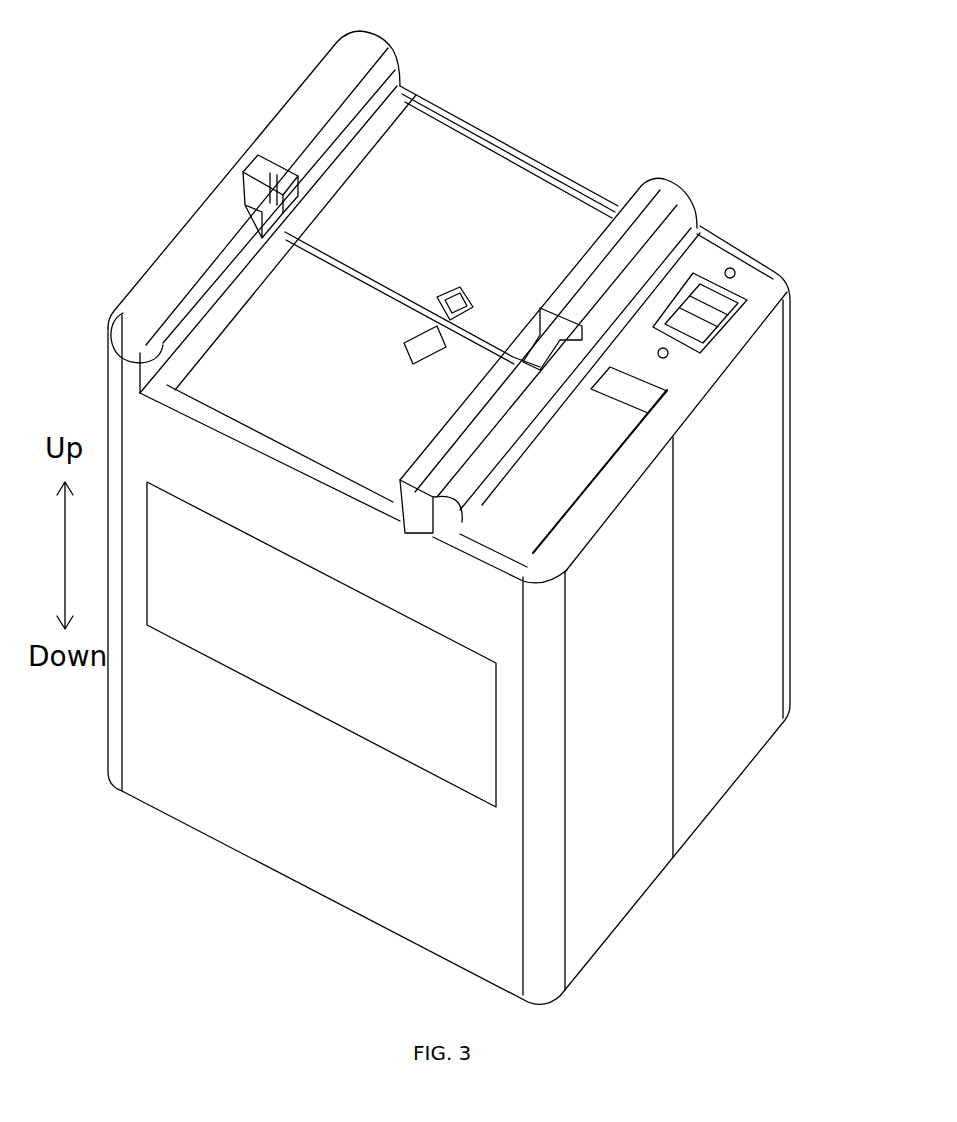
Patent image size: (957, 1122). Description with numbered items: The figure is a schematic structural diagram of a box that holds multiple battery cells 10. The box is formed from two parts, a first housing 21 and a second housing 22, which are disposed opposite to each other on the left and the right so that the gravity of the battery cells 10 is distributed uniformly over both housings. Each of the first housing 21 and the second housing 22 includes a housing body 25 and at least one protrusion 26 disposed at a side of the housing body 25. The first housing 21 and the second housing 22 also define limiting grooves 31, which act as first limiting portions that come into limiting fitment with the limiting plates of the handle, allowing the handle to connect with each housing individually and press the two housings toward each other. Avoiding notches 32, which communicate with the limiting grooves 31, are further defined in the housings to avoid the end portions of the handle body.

The battery cells 10 is at (471, 38).
The first housing 21 is at (270, 836).
The second housing 22 is at (750, 652).
The housing body 25 is at (499, 545).
The protrusion 26 is at (170, 260).
The limiting grooves 31 is at (214, 200).
The avoiding notches 32 is at (253, 186).